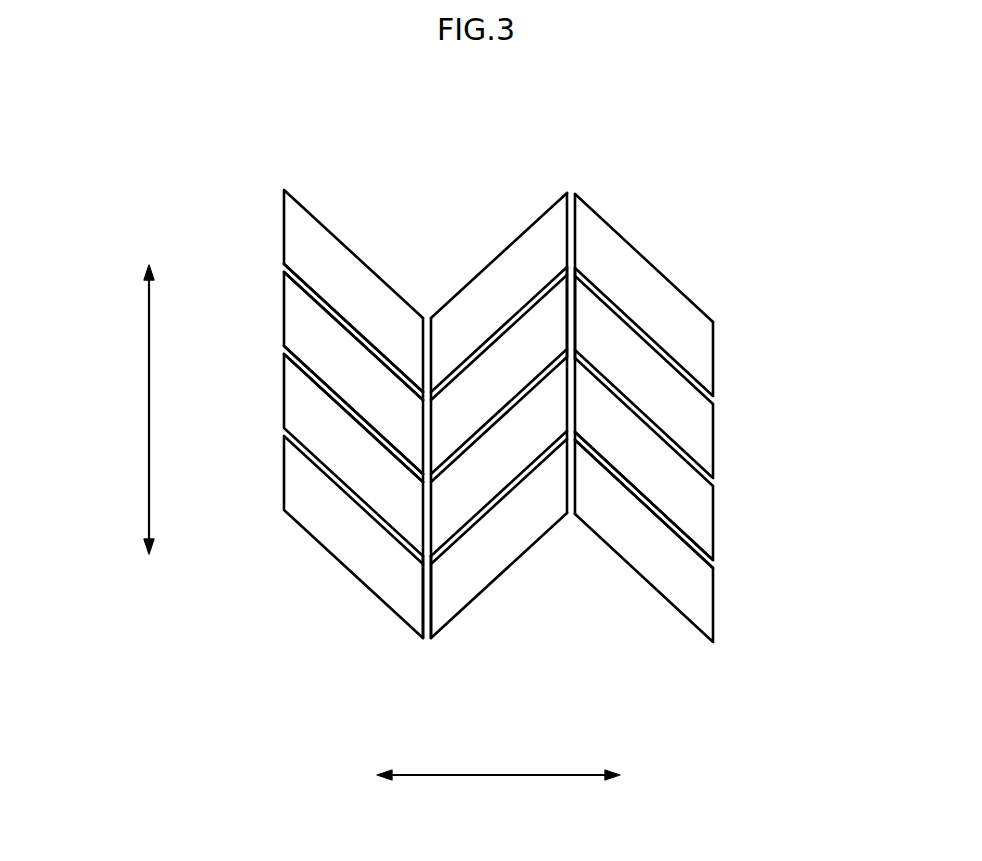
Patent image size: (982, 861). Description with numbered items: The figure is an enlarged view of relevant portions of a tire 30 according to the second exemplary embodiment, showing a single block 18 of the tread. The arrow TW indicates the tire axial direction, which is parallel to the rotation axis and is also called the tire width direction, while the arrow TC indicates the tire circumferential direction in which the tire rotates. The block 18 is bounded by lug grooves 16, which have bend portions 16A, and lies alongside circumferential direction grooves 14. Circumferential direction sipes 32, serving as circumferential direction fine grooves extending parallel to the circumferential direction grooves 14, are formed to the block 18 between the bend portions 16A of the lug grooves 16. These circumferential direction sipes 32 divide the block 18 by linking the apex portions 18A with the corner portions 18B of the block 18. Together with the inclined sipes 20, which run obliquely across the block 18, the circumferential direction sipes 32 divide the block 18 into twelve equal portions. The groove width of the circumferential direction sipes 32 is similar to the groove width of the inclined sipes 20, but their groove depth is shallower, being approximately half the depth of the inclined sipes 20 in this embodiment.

The circumferential direction grooves 14 is at (271, 403).
The lug grooves 16 is at (508, 225).
The bend portions 16A is at (573, 165).
The block 18 is at (661, 270).
The apex portions 18A is at (578, 197).
The corner portions 18B is at (422, 312).
The inclined sipes 20 is at (305, 358).
The tire 30 is at (680, 136).
The circumferential direction sipes 32 is at (571, 325).
The tire circumferential direction TC is at (148, 410).
The tire axial direction TW is at (497, 777).